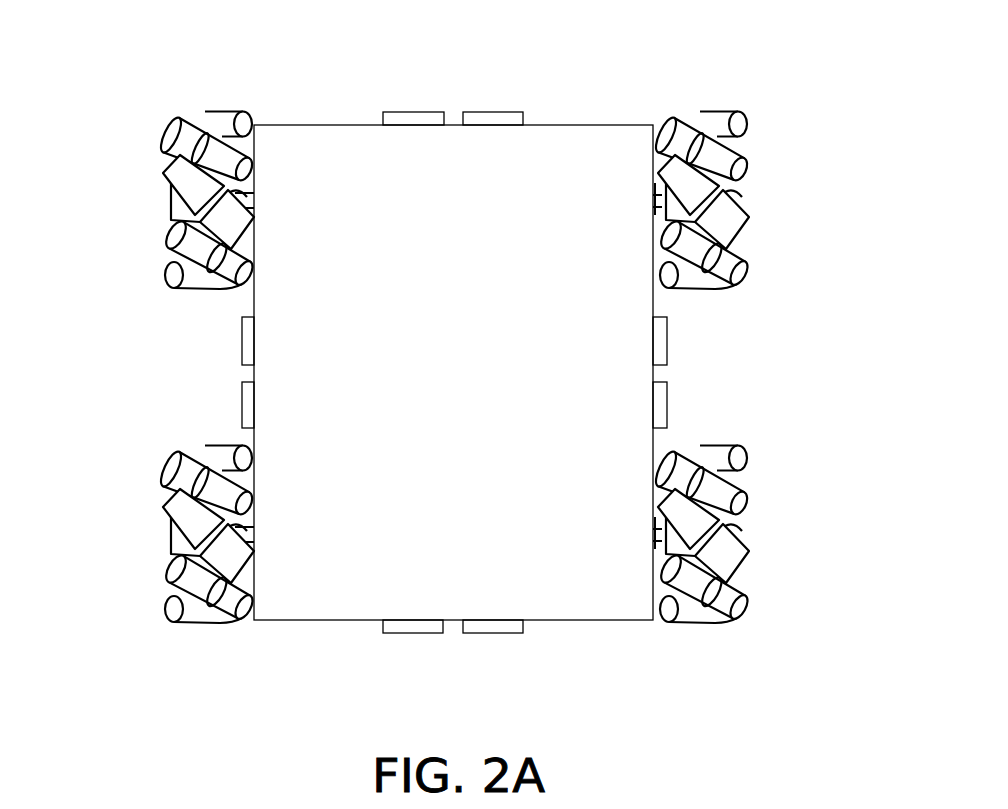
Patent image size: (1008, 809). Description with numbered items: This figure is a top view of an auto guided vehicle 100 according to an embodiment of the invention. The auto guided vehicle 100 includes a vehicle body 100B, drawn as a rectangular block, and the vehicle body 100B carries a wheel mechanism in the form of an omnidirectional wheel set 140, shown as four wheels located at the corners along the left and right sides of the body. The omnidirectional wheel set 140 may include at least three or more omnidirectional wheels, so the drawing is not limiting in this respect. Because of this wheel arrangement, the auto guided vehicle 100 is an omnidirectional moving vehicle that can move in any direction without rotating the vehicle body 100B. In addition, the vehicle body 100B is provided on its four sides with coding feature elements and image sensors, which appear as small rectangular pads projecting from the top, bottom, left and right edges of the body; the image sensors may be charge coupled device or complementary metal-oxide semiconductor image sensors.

The auto guided vehicle 100 is at (846, 693).
The vehicle body 100B is at (588, 125).
The omnidirectional wheel set 140 is at (175, 126).